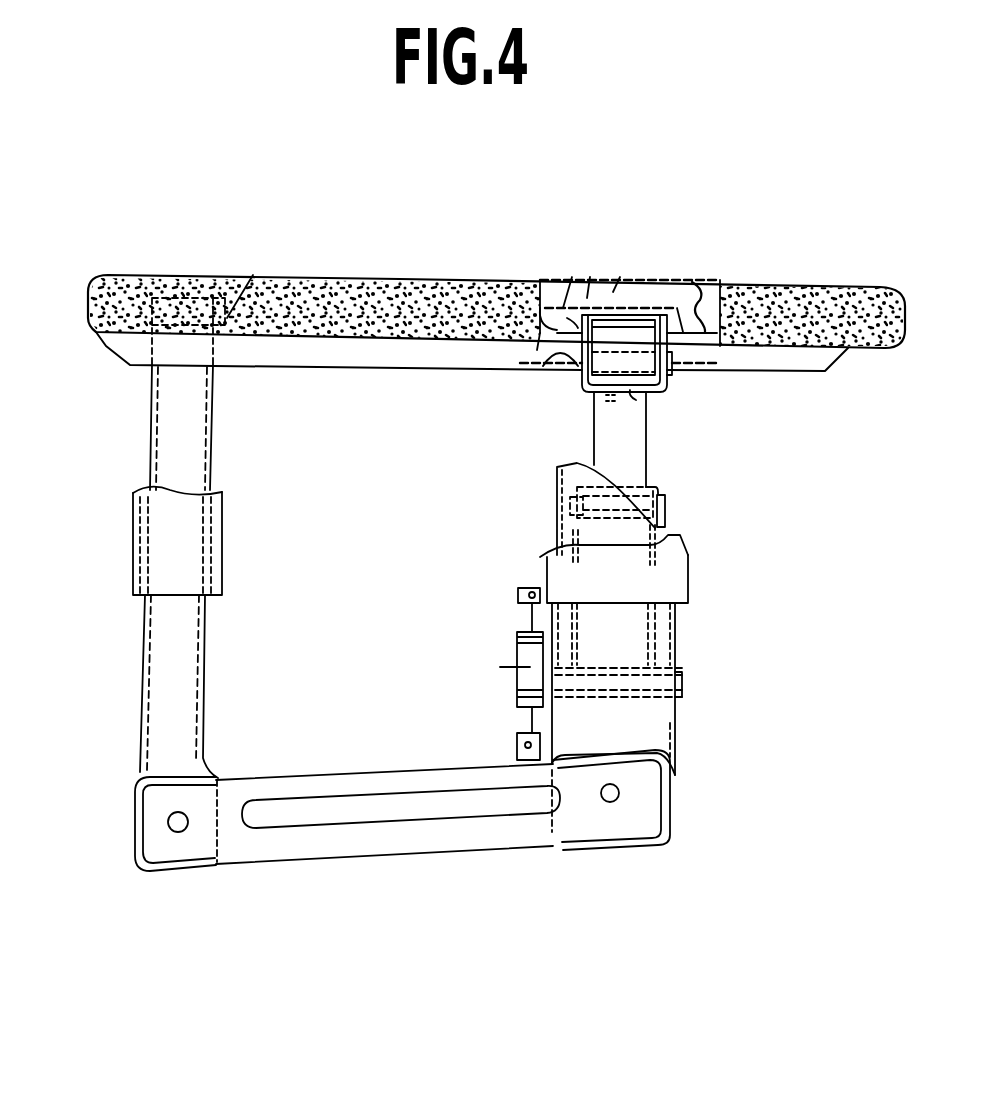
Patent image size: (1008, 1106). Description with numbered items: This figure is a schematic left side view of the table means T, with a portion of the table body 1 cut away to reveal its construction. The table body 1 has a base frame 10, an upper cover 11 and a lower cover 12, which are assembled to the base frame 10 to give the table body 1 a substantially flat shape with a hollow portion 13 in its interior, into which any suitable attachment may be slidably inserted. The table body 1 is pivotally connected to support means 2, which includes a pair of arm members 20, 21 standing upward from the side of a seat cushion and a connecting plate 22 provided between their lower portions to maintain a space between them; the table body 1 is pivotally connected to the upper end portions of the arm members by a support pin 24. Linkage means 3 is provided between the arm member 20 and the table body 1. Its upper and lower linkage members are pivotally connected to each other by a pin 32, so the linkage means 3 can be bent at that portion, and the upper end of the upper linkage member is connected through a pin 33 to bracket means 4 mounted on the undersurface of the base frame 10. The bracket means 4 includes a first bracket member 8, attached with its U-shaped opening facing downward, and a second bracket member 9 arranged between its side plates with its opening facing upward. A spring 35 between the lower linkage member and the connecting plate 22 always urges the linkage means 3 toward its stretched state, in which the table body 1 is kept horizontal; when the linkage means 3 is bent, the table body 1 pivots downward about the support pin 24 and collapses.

The table body 1 is at (790, 265).
The support means 2 is at (118, 708).
The linkage means 3 is at (665, 442).
The bracket means 4 is at (572, 277).
The first bracket member 8 is at (713, 278).
The second bracket member 9 is at (634, 392).
The base frame 10 is at (620, 277).
The upper cover 11 is at (665, 278).
The lower cover 12 is at (557, 375).
The hollow portion 13 is at (590, 277).
The arm member 20 is at (556, 513).
The arm member 21 is at (152, 436).
The connecting plate 22 is at (377, 847).
The support pin 24 is at (256, 270).
The pin 32 is at (667, 508).
The pin 33 is at (538, 372).
The spring 35 is at (500, 667).
The table means T is at (442, 265).